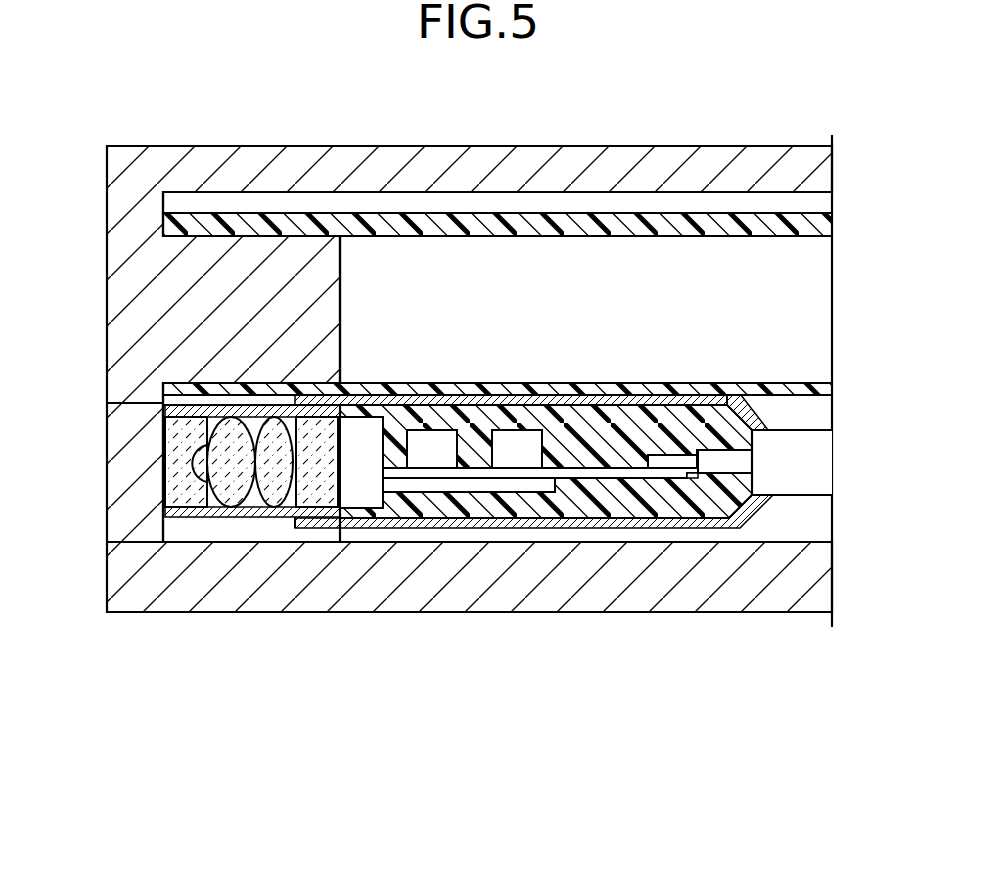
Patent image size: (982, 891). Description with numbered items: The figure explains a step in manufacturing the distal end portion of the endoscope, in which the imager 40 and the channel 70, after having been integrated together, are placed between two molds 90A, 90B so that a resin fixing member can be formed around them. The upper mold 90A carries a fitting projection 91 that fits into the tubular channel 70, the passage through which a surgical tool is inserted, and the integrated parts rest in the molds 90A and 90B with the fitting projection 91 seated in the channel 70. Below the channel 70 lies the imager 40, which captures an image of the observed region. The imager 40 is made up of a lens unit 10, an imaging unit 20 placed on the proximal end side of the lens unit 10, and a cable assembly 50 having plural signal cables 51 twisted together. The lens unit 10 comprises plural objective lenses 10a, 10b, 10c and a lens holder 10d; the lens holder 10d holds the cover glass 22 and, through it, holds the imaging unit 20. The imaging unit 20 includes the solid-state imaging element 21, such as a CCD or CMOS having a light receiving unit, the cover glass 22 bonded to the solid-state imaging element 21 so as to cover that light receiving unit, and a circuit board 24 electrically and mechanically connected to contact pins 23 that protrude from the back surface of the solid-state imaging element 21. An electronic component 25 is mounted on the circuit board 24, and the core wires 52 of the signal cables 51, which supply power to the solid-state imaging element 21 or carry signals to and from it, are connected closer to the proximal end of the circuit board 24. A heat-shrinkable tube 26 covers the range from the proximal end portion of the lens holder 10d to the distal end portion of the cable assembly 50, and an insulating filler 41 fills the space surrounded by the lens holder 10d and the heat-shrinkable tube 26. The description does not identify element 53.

The lens unit 10 is at (110, 683).
The objective lens 10a is at (190, 493).
The objective lens 10b is at (228, 495).
The objective lens 10c is at (273, 495).
The lens holder 10d is at (172, 517).
The imaging unit 20 is at (658, 680).
The solid-state imaging element 21 is at (362, 493).
The cover glass 22 is at (318, 493).
The contact pin 23 is at (527, 487).
The circuit board 24 is at (625, 470).
The electronic component 25 is at (515, 448).
The heat-shrinkable tube 26 is at (577, 525).
The imager 40 is at (520, 737).
The insulating filler 41 is at (678, 417).
The cable assembly 50 is at (782, 468).
The signal cable 51 is at (730, 455).
The core wire 52 is at (665, 462).
The joint portion 53 is at (705, 472).
The channel 70 is at (585, 218).
The mold 90A is at (246, 167).
The mold 90B is at (130, 580).
The fitting projection 91 is at (340, 322).